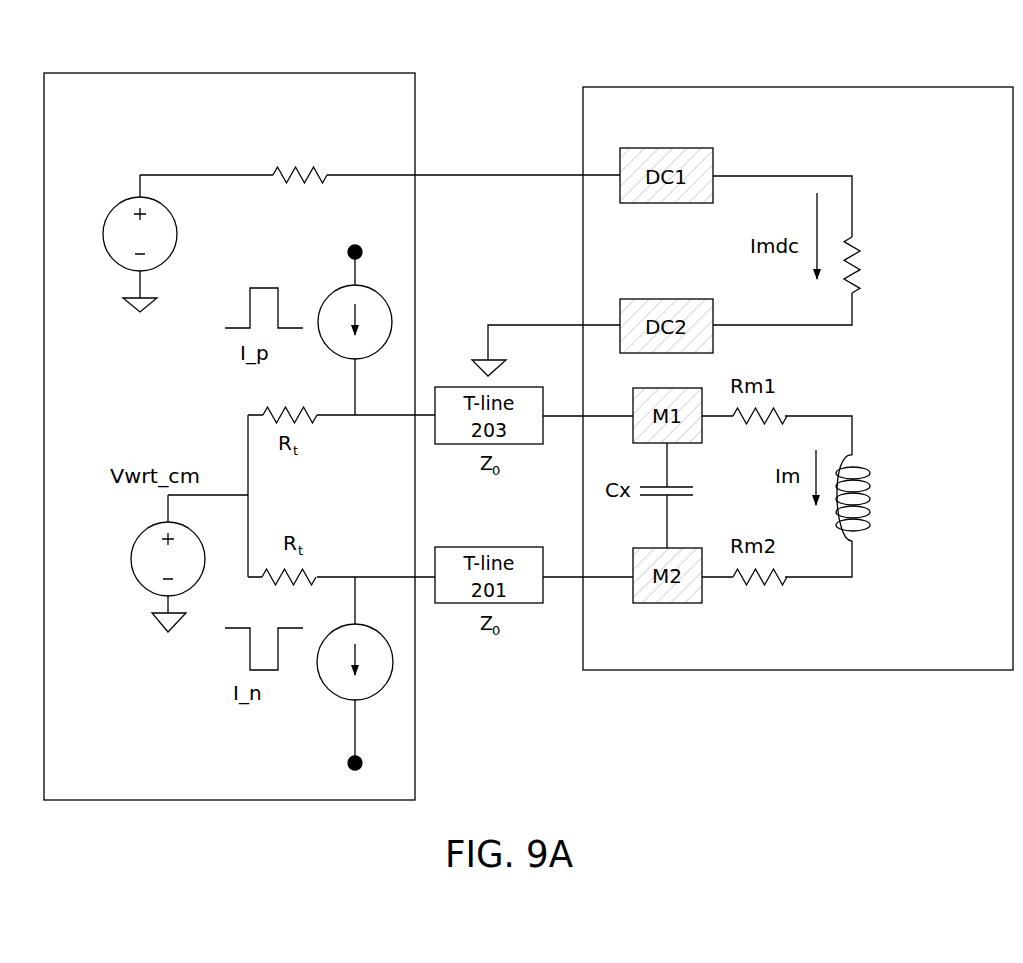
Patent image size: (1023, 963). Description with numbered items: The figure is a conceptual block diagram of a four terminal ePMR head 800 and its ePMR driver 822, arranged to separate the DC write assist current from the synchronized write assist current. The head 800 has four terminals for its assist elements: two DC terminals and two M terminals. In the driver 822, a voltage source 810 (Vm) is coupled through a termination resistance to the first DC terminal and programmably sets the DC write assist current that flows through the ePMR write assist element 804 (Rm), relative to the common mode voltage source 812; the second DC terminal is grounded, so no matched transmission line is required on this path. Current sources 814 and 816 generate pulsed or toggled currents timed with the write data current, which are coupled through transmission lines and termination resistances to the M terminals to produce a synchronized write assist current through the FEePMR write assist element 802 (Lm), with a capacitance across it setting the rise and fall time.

The driver 822 is at (226, 70).
The voltage source 810 is at (126, 181).
The current source 814 is at (333, 272).
The common mode voltage source 812 is at (136, 594).
The current source 816 is at (325, 697).
The head 800 is at (804, 83).
The ePMR write assist element 804 is at (878, 212).
The write assist element 802 is at (879, 446).